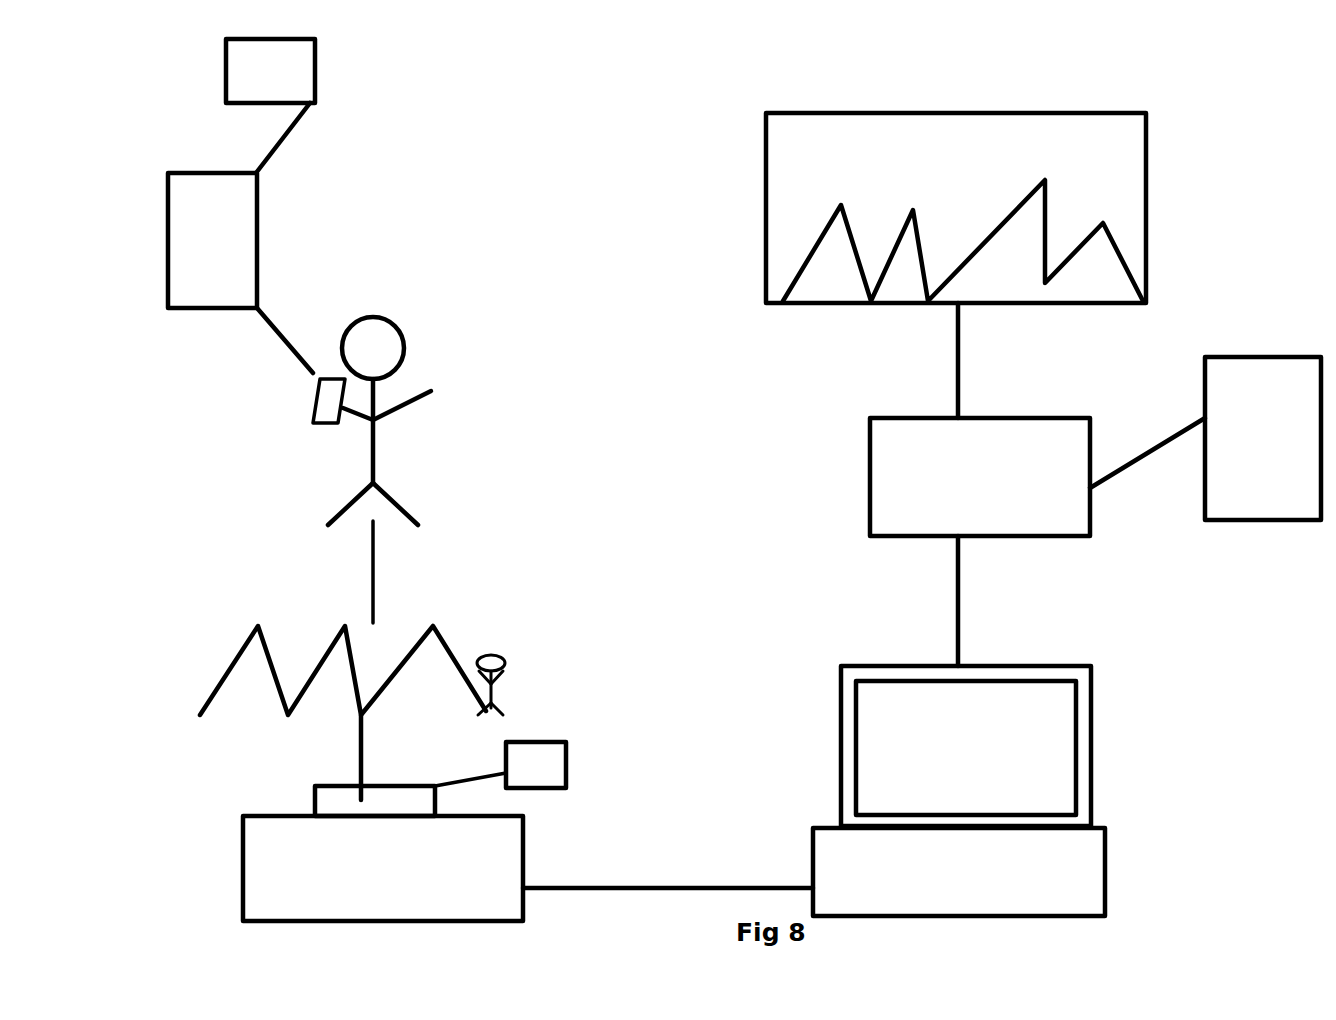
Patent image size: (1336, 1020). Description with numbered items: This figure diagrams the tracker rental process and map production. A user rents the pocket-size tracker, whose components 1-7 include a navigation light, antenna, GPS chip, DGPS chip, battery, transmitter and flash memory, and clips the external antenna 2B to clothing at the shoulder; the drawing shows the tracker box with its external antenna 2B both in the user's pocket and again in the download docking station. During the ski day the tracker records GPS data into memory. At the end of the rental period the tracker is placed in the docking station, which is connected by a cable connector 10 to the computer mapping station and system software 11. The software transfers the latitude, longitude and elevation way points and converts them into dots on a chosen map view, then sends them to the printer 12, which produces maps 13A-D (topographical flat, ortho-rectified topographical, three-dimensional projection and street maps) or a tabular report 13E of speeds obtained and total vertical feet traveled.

The external antenna with clips 2B is at (312, 80).
The tracker device components 1-7 is at (254, 202).
The cable connector 10 is at (722, 895).
The computer mapping station and system software 11 is at (1088, 692).
The printer 12 is at (867, 458).
The maps 13A-D is at (1143, 137).
The tabular report 13E is at (1247, 517).